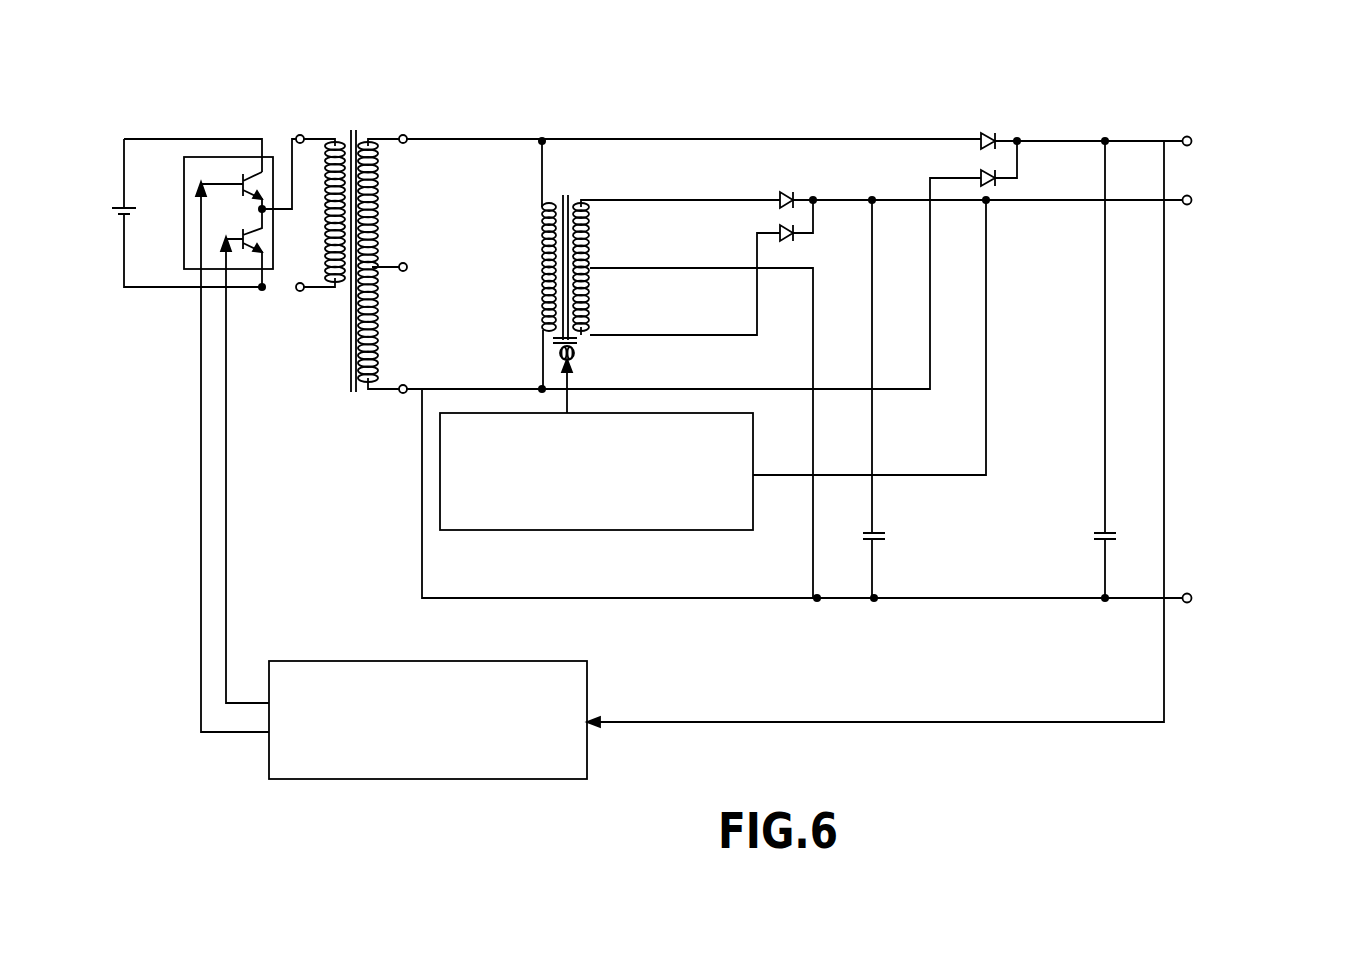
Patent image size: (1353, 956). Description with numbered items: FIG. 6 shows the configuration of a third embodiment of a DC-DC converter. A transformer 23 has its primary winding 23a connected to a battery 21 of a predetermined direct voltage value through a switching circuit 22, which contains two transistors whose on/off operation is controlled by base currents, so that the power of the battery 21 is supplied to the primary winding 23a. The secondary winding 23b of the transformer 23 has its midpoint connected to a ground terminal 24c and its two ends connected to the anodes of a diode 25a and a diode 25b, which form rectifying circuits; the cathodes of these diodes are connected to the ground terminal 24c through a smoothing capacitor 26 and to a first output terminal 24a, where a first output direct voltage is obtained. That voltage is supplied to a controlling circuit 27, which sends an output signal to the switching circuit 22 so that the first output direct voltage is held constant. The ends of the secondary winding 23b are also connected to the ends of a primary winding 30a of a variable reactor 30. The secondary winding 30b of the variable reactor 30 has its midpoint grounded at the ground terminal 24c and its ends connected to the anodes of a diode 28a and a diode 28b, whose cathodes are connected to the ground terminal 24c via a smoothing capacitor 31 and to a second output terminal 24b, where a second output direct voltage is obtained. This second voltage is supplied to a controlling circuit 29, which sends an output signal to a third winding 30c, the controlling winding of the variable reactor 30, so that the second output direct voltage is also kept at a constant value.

The battery 21 is at (135, 210).
The switching circuit 22 is at (185, 268).
The transformer 23 is at (356, 200).
The primary winding 23a is at (340, 141).
The secondary winding 23b is at (370, 141).
The first output terminal 24a is at (1218, 143).
The second output terminal 24b is at (1218, 203).
The ground terminal 24c is at (1259, 601).
The diode 25a is at (990, 141).
The diode 25b is at (1000, 179).
The capacitor 26 is at (1097, 537).
The controlling circuit 27 is at (308, 661).
The diode 28a is at (799, 197).
The diode 28b is at (800, 238).
The controlling circuit 29 is at (535, 531).
The variable reactor 30 is at (594, 210).
The primary winding 30a is at (545, 196).
The secondary winding 30b is at (586, 201).
The third winding 30c is at (583, 352).
The capacitor 31 is at (866, 537).